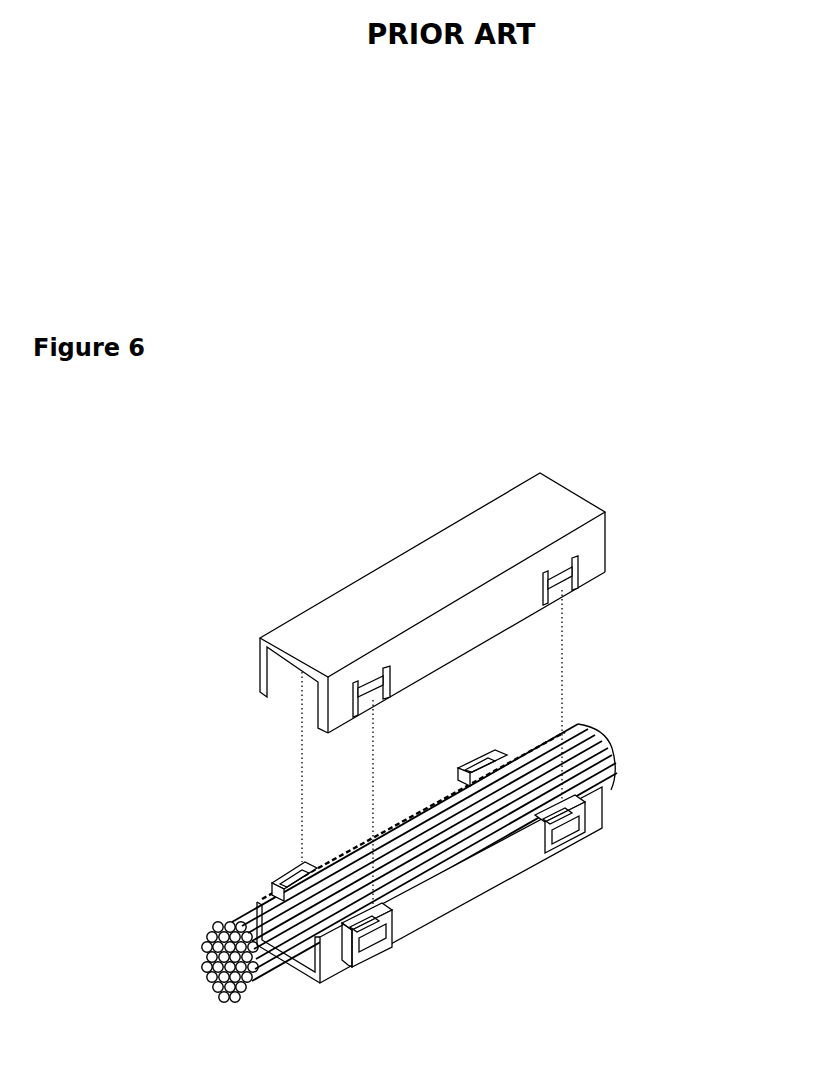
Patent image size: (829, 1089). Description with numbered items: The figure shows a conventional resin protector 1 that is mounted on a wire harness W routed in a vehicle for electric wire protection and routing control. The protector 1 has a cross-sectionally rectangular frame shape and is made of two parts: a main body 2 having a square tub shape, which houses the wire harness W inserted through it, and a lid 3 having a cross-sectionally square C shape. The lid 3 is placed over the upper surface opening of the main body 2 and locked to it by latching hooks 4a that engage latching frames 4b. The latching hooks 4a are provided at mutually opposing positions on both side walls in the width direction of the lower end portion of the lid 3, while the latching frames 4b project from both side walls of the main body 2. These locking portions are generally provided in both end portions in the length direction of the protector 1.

The protector 1 is at (338, 552).
The main body 2 is at (460, 948).
The lid 3 is at (463, 519).
The latching hooks 4a is at (568, 592).
The latching frames 4b is at (482, 745).
The wire harness W is at (590, 728).